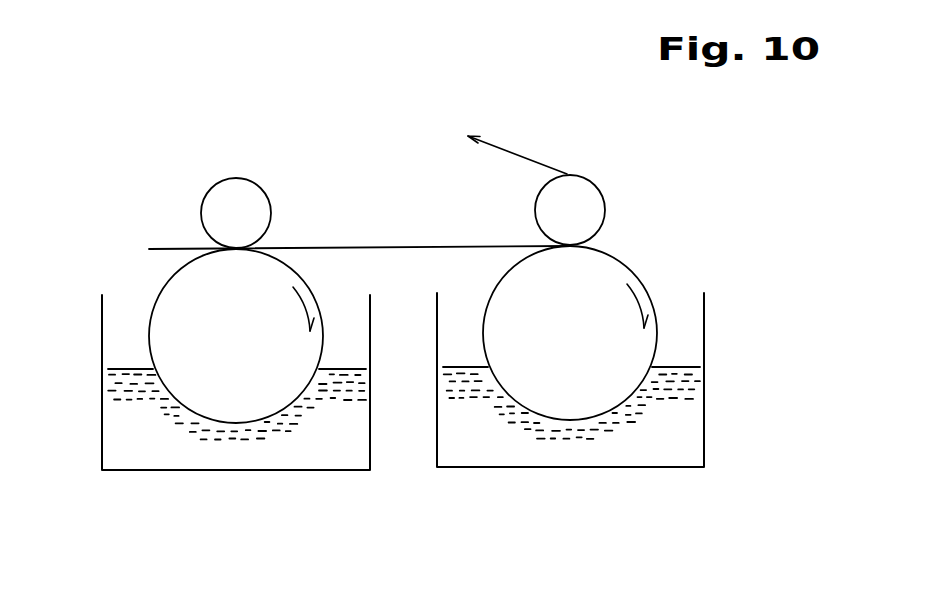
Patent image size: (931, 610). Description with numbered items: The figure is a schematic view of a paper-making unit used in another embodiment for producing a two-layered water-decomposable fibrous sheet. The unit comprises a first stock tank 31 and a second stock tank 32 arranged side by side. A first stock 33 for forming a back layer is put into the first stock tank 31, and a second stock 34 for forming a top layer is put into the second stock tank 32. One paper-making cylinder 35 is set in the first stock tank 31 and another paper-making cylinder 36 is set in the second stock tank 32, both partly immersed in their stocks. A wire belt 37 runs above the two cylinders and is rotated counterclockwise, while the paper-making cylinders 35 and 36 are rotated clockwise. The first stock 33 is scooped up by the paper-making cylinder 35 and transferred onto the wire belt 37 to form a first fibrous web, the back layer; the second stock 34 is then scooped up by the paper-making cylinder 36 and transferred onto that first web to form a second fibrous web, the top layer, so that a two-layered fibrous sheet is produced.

The first stock tank 31 is at (140, 470).
The second stock tank 32 is at (473, 467).
The first stock 33 is at (260, 437).
The second stock 34 is at (597, 435).
The paper-making cylinder 35 is at (149, 335).
The paper-making cylinder 36 is at (638, 272).
The wire belt 37 is at (397, 247).